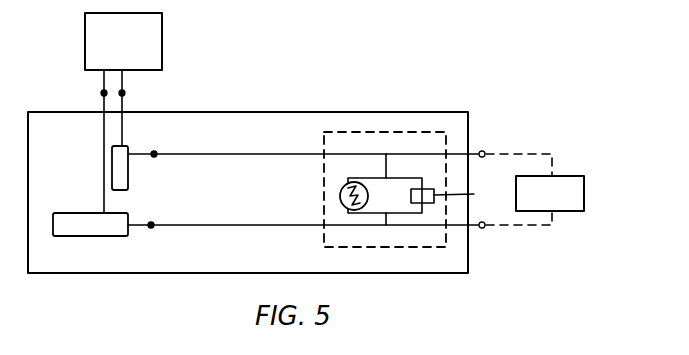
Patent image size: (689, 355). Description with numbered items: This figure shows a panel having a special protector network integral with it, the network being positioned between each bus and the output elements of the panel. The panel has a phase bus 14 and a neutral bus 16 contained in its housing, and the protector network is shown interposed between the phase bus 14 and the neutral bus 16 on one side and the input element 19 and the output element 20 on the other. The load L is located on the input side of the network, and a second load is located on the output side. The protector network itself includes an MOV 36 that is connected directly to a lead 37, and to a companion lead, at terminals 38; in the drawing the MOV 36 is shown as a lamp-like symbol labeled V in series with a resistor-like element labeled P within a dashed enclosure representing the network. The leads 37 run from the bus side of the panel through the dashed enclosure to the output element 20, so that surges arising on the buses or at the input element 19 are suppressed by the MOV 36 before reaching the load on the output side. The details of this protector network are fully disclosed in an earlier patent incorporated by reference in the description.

The neutral bus 16 is at (248, 192).
The load L is at (157, 21).
The input element 19 is at (122, 93).
The phase bus 14 is at (128, 181).
The lead 37 is at (166, 155).
The terminal 38 is at (148, 139).
The MOV 36 is at (358, 155).
The lamp V is at (340, 193).
The resistor P is at (449, 194).
The output element 20 is at (487, 151).